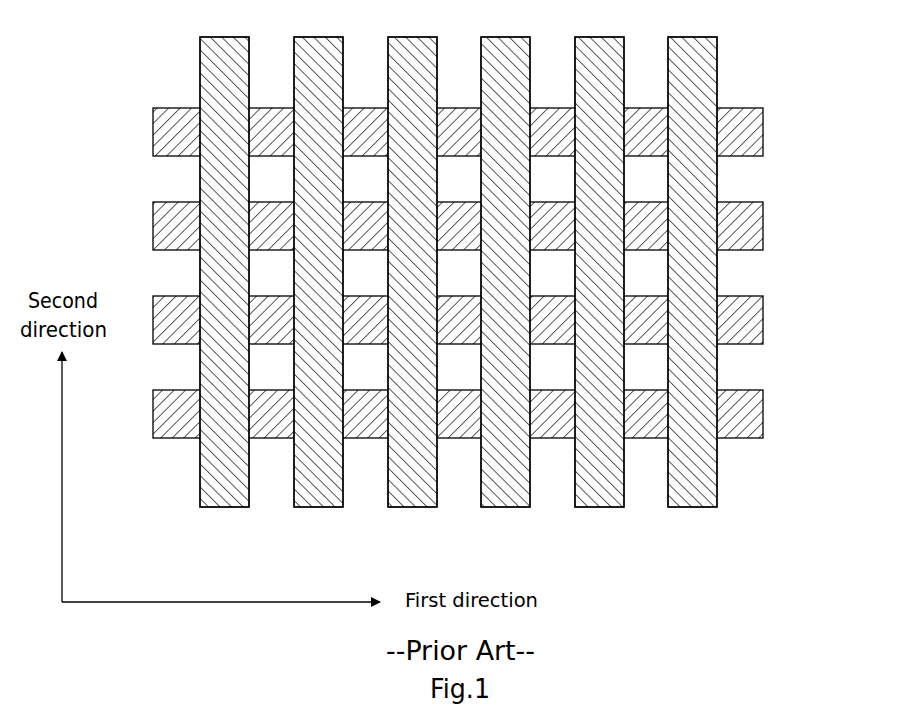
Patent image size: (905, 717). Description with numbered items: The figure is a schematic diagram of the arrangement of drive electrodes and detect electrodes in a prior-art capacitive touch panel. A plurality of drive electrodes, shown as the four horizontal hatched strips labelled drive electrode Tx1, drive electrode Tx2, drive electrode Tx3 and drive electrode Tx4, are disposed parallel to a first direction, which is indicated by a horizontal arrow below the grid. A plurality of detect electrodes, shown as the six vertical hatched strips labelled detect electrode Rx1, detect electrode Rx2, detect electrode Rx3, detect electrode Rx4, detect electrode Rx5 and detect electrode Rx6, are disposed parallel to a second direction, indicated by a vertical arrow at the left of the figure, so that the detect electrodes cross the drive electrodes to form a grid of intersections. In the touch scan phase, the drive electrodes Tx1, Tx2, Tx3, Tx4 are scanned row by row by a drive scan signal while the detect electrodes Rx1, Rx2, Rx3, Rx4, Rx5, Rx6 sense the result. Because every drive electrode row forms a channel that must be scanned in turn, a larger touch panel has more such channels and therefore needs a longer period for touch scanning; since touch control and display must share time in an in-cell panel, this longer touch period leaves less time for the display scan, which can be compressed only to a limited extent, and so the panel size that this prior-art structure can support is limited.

The drive electrode Tx1 is at (487, 132).
The drive electrode Tx2 is at (487, 226).
The drive electrode Tx3 is at (487, 320).
The drive electrode Tx4 is at (487, 414).
The detect electrode Rx1 is at (224, 289).
The detect electrode Rx2 is at (318, 289).
The detect electrode Rx3 is at (412, 289).
The detect electrode Rx4 is at (505, 289).
The detect electrode Rx5 is at (599, 289).
The detect electrode Rx6 is at (692, 289).